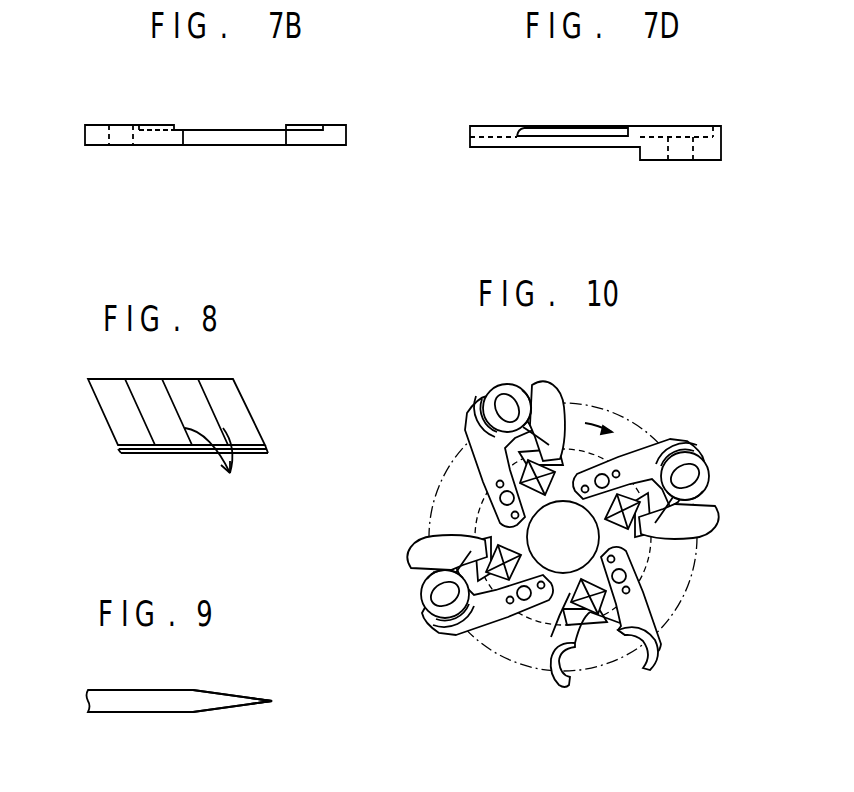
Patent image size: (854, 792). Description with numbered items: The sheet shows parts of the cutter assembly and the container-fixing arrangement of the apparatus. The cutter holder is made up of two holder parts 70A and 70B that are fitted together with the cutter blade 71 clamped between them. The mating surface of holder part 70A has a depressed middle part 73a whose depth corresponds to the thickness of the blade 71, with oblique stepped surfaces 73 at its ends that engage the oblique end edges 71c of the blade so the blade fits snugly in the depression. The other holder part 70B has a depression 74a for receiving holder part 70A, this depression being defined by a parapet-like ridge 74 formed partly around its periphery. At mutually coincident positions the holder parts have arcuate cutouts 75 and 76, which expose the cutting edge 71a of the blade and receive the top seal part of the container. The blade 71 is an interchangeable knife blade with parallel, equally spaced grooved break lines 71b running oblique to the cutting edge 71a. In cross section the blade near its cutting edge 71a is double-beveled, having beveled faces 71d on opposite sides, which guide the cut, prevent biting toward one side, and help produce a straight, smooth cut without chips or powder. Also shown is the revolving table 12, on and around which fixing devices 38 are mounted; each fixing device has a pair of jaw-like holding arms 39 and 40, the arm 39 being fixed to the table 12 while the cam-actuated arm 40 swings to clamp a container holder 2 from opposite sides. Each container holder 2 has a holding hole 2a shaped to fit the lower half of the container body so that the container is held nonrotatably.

In FIG. 7B, the holder part 70A is at (140, 170).
In FIG. 7D, the holder part 70B is at (555, 171).
In FIG. 7B, the oblique stepped surfaces 73 is at (231, 106).
In FIG. 7B, the depressed middle part 73a is at (234, 106).
In FIG. 7B, the arcuate cutout 75 is at (237, 167).
In FIG. 7D, the parapet-like ridge 74 is at (493, 109).
In FIG. 7D, the depression 74a is at (572, 109).
In FIG. 7D, the arcuate cutout 76 is at (528, 109).
In FIG. 8, the cutter blade 71 is at (178, 441).
In FIG. 9, the cutter blade 71 is at (180, 728).
In FIG. 8, the cutting edge 71a is at (193, 476).
In FIG. 9, the cutting edge 71a is at (272, 677).
In FIG. 8, the grooved break lines 71b is at (219, 465).
In FIG. 8, the oblique end edges 71c is at (178, 412).
In FIG. 9, the beveled faces 71d is at (232, 707).
In FIG. 10, the container holder 2 is at (561, 475).
In FIG. 10, the holding hole 2a is at (566, 506).
In FIG. 10, the fixing device 38 is at (554, 545).
In FIG. 10, the holding arm 39 is at (563, 531).
In FIG. 10, the holding arm 40 is at (594, 556).
In FIG. 10, the revolving table 12 is at (563, 547).